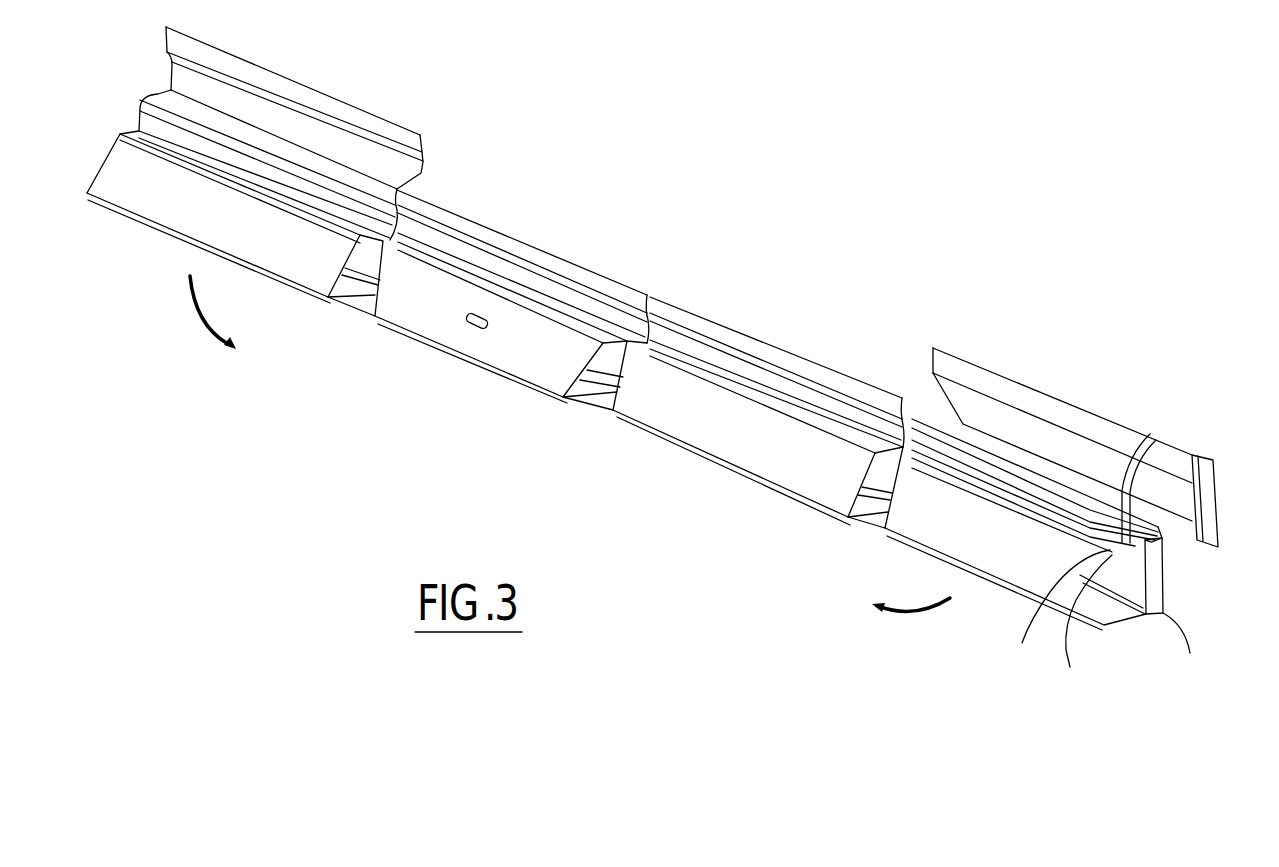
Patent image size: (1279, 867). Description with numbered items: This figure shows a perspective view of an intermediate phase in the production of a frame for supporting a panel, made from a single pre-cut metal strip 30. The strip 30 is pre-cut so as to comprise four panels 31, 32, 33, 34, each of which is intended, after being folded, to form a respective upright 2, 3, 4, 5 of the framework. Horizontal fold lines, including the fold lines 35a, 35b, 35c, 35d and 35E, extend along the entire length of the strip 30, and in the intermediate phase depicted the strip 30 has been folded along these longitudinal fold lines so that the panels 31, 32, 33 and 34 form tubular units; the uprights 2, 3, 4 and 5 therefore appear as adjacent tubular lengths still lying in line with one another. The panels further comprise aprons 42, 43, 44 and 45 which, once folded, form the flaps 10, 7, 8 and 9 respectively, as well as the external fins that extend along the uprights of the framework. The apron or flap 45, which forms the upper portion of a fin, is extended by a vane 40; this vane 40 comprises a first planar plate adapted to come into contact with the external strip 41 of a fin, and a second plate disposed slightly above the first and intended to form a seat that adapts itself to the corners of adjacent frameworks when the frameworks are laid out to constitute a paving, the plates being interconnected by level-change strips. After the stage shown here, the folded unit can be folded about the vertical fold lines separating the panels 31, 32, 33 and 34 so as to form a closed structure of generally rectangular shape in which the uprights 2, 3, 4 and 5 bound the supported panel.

The upright 2 is at (150, 227).
The upright 3 is at (388, 333).
The upright 4 is at (740, 476).
The upright 5 is at (990, 580).
The flap 7 is at (472, 217).
The flap 8 is at (708, 317).
The flap 9 is at (985, 368).
The flap 10 is at (278, 72).
The metal strip 30 is at (634, 435).
The panel 31 is at (274, 280).
The panel 32 is at (484, 375).
The panel 33 is at (771, 487).
The panel 34 is at (893, 543).
The longitudinal fold line 35a is at (1053, 611).
The longitudinal fold line 35b is at (1150, 434).
The longitudinal fold line 35c is at (1088, 628).
The longitudinal fold line 35d is at (1192, 649).
The horizontal fold line 35E is at (1163, 537).
The vane 40 is at (1205, 510).
The external strip 41 is at (1152, 588).
The apron 42 is at (420, 143).
The apron 43 is at (594, 270).
The apron 44 is at (837, 363).
The apron 45 is at (1078, 402).